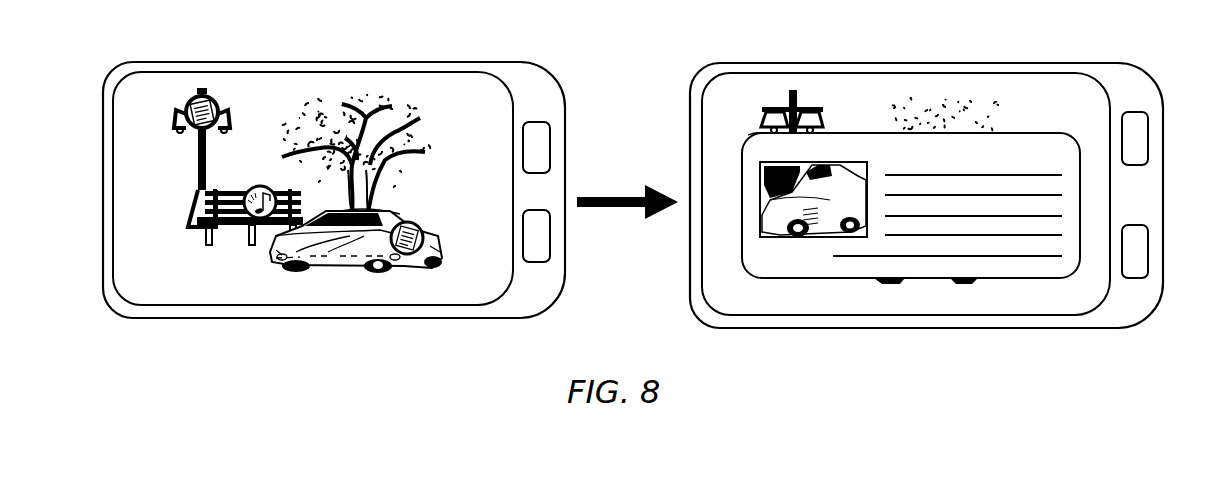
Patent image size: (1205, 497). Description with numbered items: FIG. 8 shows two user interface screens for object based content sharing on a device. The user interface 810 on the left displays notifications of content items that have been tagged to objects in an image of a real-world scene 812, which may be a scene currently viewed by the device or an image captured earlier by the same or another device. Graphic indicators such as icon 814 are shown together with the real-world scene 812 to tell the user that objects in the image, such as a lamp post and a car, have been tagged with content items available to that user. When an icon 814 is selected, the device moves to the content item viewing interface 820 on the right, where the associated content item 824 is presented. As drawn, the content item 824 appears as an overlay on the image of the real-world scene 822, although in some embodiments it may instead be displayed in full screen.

The user interface 810 is at (345, 368).
The real-world scene 812 is at (130, 141).
The icon 814 is at (199, 90).
The content item viewing interface 820 is at (931, 368).
The image of the real-world scene 822 is at (717, 117).
The content item 824 is at (978, 132).